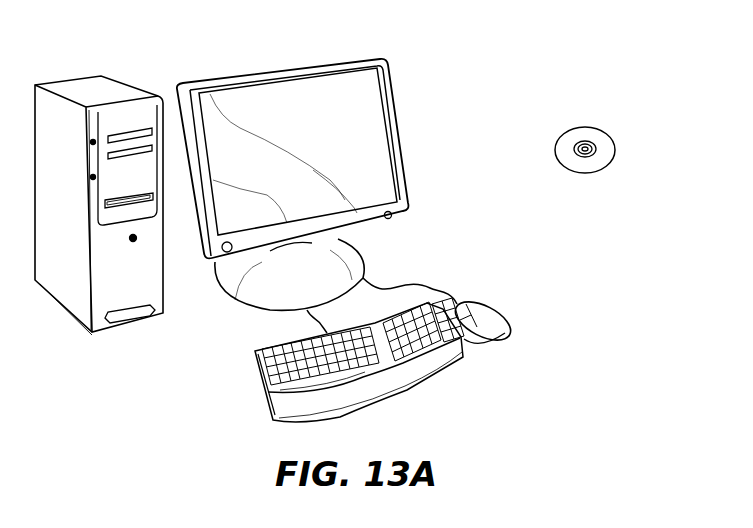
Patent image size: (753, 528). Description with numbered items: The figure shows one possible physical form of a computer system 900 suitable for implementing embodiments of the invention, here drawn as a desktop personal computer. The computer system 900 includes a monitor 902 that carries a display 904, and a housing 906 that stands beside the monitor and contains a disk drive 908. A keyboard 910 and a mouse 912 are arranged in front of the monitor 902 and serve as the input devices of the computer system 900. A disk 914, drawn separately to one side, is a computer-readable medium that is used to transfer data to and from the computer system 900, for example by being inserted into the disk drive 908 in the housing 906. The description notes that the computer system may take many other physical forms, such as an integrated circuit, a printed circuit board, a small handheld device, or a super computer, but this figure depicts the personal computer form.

The computer system 900 is at (513, 44).
The monitor 902 is at (403, 157).
The display 904 is at (360, 97).
The housing 906 is at (85, 88).
The disk drive 908 is at (143, 199).
The keyboard 910 is at (267, 393).
The mouse 912 is at (503, 312).
The disk 914 is at (600, 128).